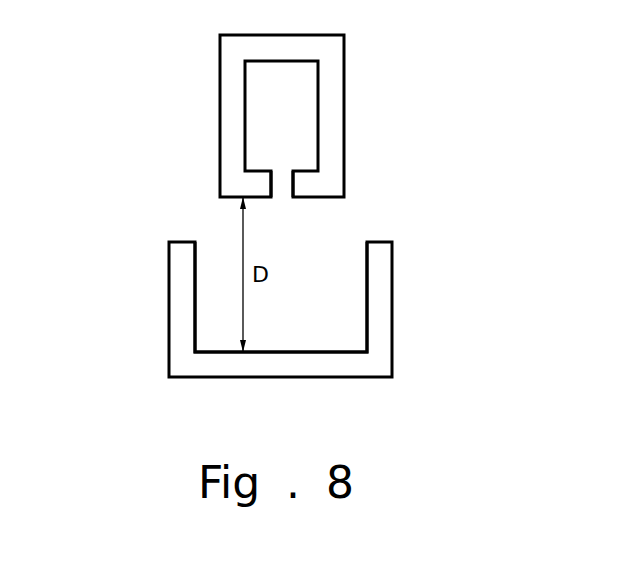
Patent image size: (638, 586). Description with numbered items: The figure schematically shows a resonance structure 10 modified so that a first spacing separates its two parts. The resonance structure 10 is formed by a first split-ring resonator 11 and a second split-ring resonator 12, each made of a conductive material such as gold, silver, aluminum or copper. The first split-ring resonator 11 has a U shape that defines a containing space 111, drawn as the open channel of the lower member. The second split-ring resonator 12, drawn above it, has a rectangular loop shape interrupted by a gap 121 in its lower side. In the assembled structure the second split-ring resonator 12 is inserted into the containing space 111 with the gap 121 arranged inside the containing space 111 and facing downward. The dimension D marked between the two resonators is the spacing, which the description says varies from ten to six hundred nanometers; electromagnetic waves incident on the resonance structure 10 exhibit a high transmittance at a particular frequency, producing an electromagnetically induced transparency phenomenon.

The resonance structure 10 is at (155, 95).
The first split-ring resonator 11 is at (175, 283).
The containing space 111 is at (349, 332).
The second split-ring resonator 12 is at (235, 122).
The gap 121 is at (286, 190).